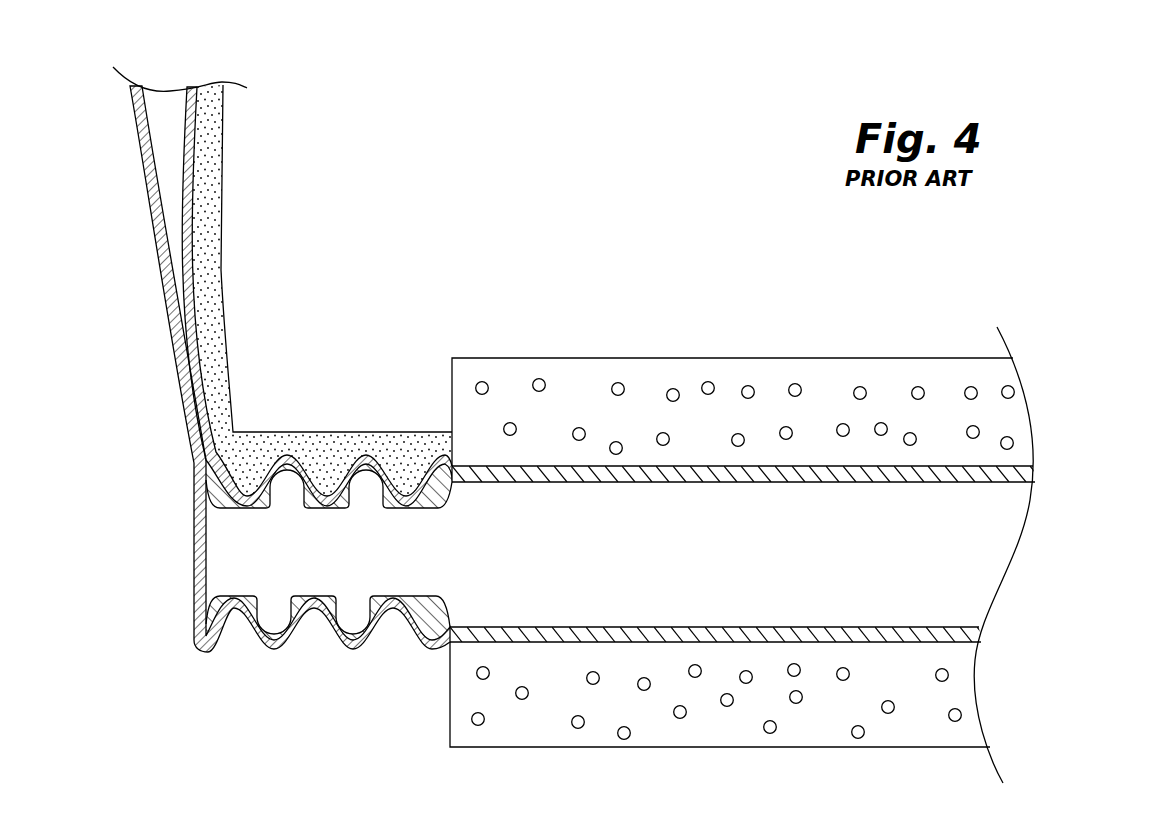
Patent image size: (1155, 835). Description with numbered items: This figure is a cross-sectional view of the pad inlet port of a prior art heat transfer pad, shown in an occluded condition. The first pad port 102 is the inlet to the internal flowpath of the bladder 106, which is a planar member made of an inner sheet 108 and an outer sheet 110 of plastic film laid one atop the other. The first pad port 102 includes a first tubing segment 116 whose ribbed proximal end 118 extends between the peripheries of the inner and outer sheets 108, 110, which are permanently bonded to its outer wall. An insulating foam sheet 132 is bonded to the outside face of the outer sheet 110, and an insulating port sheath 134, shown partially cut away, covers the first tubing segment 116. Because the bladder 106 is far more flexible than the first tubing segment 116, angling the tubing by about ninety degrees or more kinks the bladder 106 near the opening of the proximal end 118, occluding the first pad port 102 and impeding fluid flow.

The first pad port 102 is at (983, 553).
The bladder 106 is at (152, 215).
The inner sheet 108 is at (134, 100).
The outer sheet 110 is at (190, 86).
The first tubing segment 116 is at (1027, 475).
The proximal end 118 is at (648, 466).
The insulating foam sheet 132 is at (207, 291).
The insulating port sheath 134 is at (953, 359).